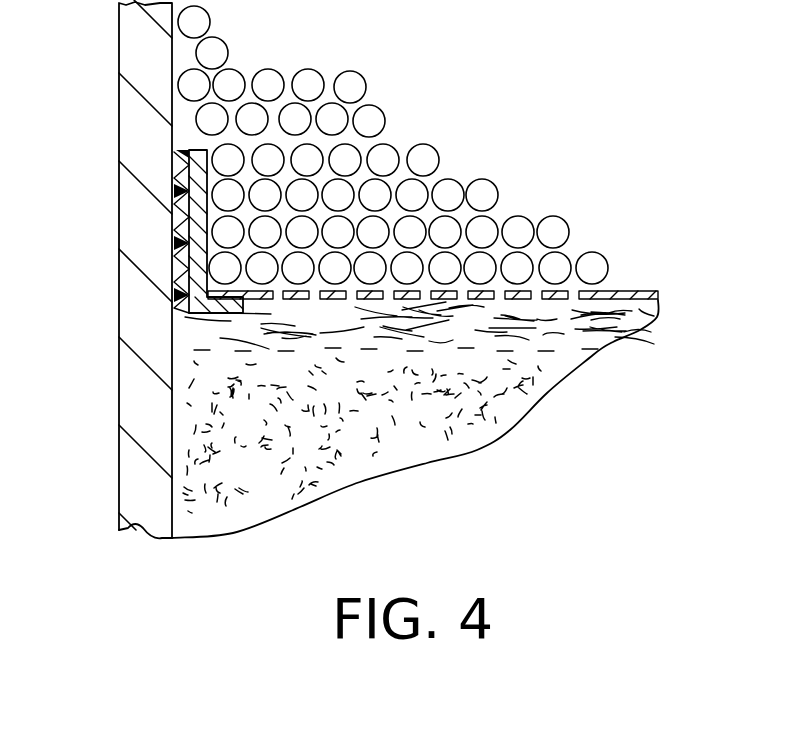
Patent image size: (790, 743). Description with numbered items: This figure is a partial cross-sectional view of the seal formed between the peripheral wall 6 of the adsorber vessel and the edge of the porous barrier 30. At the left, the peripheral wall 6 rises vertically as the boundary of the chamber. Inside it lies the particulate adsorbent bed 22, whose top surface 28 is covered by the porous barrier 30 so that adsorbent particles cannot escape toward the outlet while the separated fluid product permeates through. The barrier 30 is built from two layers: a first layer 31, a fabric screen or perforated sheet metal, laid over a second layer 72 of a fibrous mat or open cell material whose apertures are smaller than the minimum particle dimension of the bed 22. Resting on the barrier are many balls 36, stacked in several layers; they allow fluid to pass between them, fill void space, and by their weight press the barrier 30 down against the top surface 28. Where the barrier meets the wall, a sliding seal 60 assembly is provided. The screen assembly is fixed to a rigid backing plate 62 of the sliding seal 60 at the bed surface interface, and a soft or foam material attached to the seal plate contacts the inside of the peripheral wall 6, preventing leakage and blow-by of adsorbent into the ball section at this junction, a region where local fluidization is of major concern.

The peripheral wall 6 is at (145, 75).
The particulate adsorbent bed 22 is at (297, 450).
The top surface 28 is at (558, 363).
The porous barrier 30 is at (668, 292).
The first layer 31 is at (645, 292).
The balls 36 is at (521, 225).
The sliding seal 60 is at (182, 265).
The rigid backing plate 62 is at (198, 315).
The second layer 72 is at (590, 352).